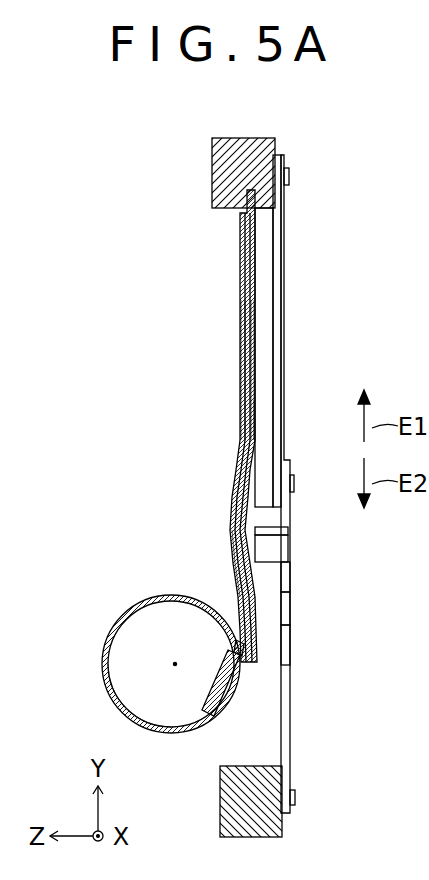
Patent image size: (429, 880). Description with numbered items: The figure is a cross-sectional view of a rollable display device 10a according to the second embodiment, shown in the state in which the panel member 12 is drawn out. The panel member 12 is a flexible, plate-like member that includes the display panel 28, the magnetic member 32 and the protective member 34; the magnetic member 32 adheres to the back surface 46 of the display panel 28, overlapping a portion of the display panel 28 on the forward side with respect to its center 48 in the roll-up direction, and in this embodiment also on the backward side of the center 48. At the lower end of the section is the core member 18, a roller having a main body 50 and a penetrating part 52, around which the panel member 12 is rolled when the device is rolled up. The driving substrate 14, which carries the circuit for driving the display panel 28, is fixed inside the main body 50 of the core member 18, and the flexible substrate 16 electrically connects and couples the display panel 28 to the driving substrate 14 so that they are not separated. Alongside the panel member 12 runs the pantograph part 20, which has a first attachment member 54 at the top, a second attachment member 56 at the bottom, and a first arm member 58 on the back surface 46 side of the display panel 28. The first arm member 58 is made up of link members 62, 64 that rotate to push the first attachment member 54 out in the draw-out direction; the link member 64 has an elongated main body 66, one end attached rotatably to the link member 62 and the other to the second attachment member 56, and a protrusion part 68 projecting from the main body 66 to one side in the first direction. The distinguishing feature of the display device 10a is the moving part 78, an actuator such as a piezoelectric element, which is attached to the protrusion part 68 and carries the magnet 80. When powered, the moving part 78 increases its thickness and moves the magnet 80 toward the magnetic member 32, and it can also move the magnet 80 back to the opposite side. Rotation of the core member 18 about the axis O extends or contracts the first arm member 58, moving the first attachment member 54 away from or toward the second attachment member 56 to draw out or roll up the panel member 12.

The display device 10a is at (128, 222).
The panel member 12 is at (238, 350).
The driving substrate 14 is at (228, 712).
The flexible substrate 16 is at (248, 596).
The core member 18 is at (104, 672).
The pantograph part 20 is at (291, 164).
The display panel 28 is at (243, 375).
The magnetic member 32 is at (257, 396).
The protective member 34 is at (258, 355).
The back surface 46 is at (259, 438).
The center 48 is at (246, 408).
The main body 50 is at (112, 705).
The penetrating part 52 is at (232, 642).
The first attachment member 54 is at (222, 184).
The second attachment member 56 is at (222, 802).
The first arm member 58 is at (285, 302).
The link member 62 is at (284, 259).
The link member 64 is at (292, 582).
The main body 66 is at (291, 641).
The protrusion part 68 is at (291, 612).
The moving part 78 is at (282, 551).
The magnet 80 is at (272, 537).
The axis O is at (174, 666).